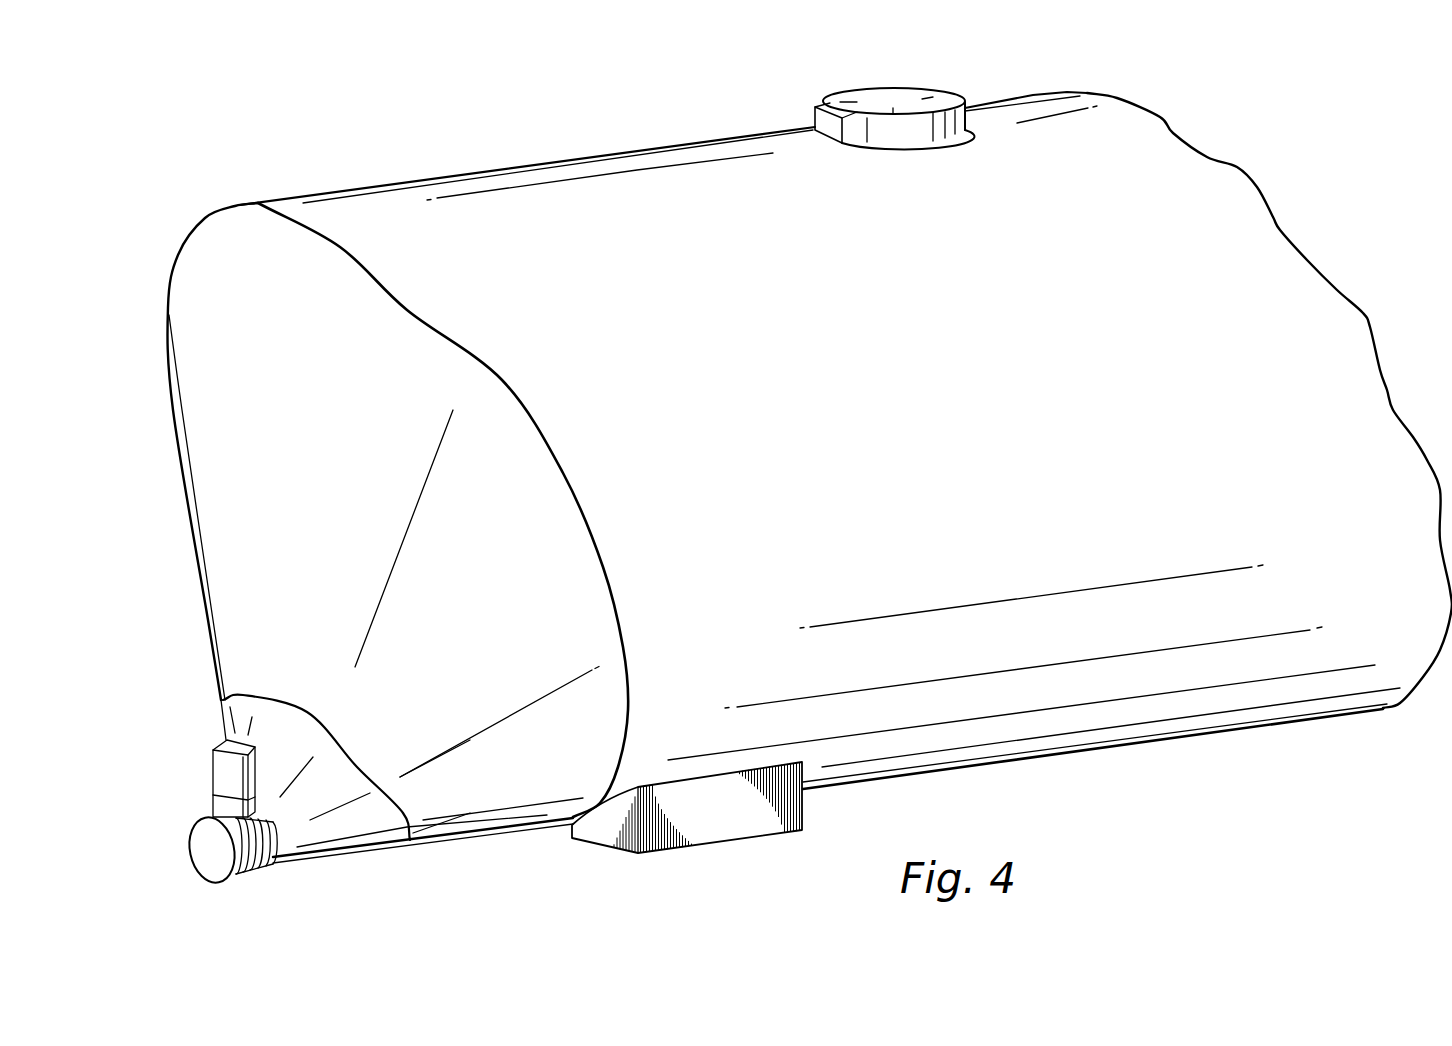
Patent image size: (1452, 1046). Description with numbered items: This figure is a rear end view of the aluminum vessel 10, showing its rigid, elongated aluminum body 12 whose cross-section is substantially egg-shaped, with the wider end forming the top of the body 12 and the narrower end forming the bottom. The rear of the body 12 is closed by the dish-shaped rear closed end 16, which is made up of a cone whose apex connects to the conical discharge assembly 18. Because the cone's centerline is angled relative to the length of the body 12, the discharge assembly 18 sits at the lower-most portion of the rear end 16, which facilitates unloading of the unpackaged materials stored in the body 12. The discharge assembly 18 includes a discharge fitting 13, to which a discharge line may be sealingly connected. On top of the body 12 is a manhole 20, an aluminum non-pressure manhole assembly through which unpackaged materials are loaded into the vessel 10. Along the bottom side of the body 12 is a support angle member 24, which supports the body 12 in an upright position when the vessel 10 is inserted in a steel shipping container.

The aluminum vessel 10 is at (385, 153).
The aluminum body 12 is at (1192, 670).
The discharge fitting 13 is at (203, 863).
The rear closed end 16 is at (210, 465).
The conical discharge assembly 18 is at (340, 827).
The manhole 20 is at (880, 97).
The support angle member 24 is at (740, 830).